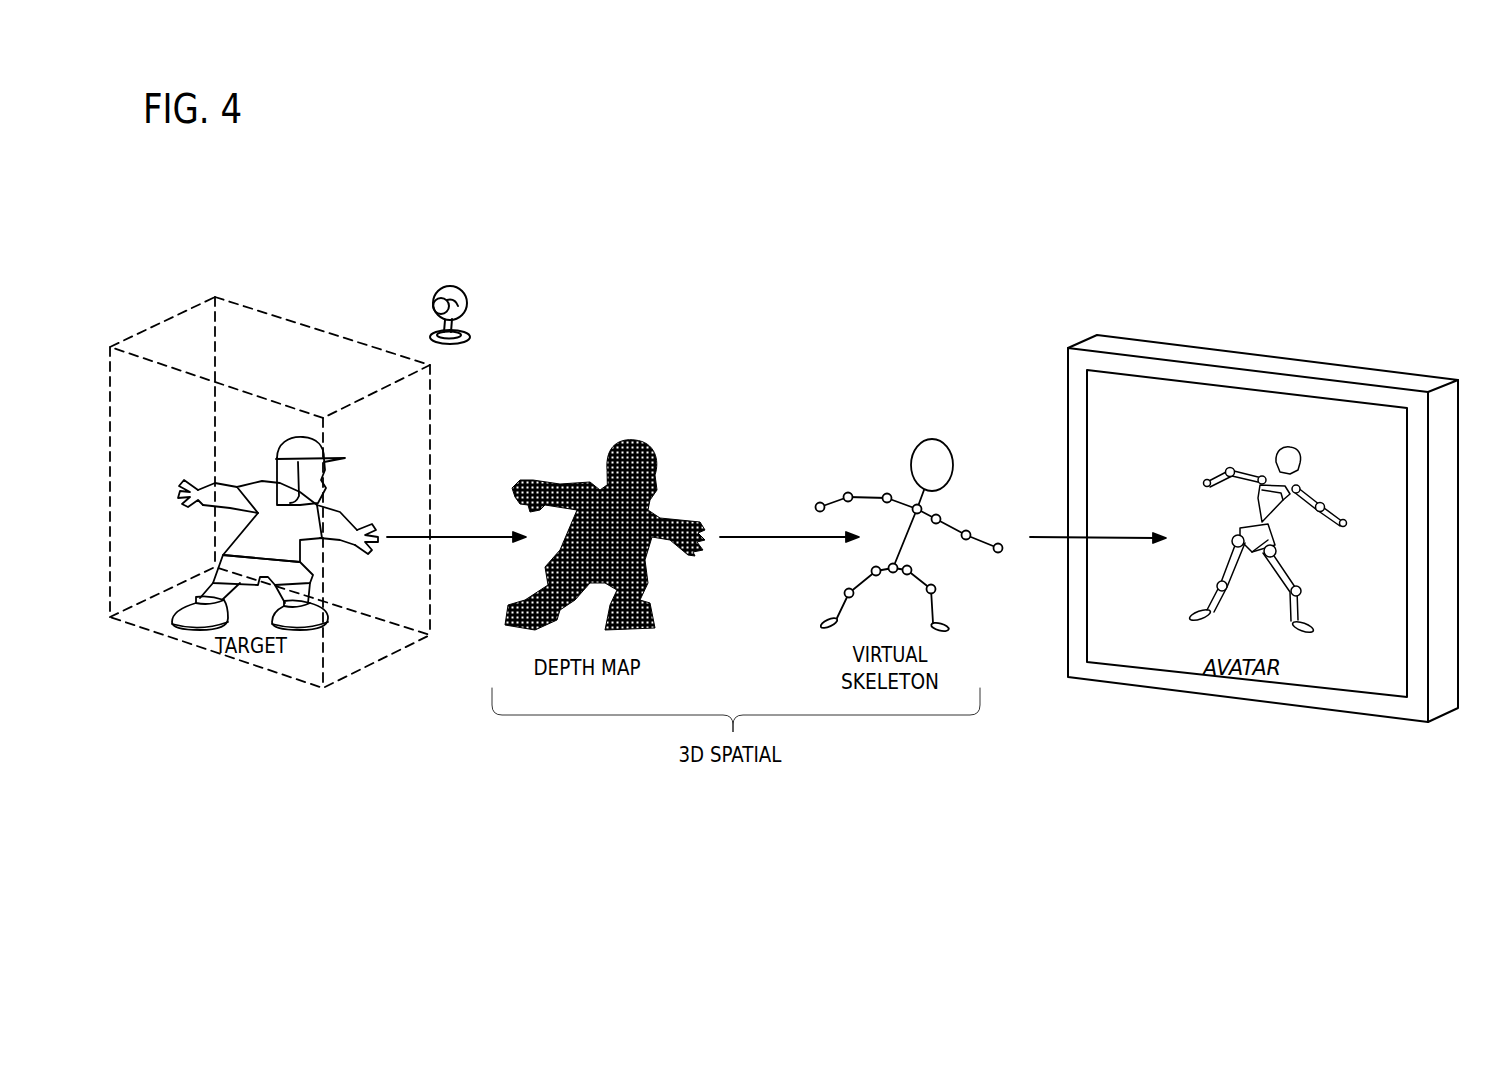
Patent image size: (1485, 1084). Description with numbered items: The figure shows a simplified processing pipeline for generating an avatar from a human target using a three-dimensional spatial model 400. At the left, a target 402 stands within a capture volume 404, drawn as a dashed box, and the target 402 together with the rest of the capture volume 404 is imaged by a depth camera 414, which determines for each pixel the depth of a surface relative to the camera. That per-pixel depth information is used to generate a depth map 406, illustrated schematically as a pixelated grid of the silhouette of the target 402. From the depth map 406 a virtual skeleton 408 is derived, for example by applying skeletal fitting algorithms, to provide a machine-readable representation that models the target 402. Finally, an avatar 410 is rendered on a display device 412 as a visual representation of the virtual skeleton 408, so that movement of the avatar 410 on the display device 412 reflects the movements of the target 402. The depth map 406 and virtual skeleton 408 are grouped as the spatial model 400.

The 3D spatial model 400 is at (781, 793).
The target 402 is at (256, 547).
The capture volume 404 is at (317, 328).
The depth map 406 is at (618, 440).
The virtual skeleton 408 is at (917, 475).
The avatar 410 is at (1283, 448).
The display device 412 is at (1354, 598).
The depth camera 414 is at (465, 292).